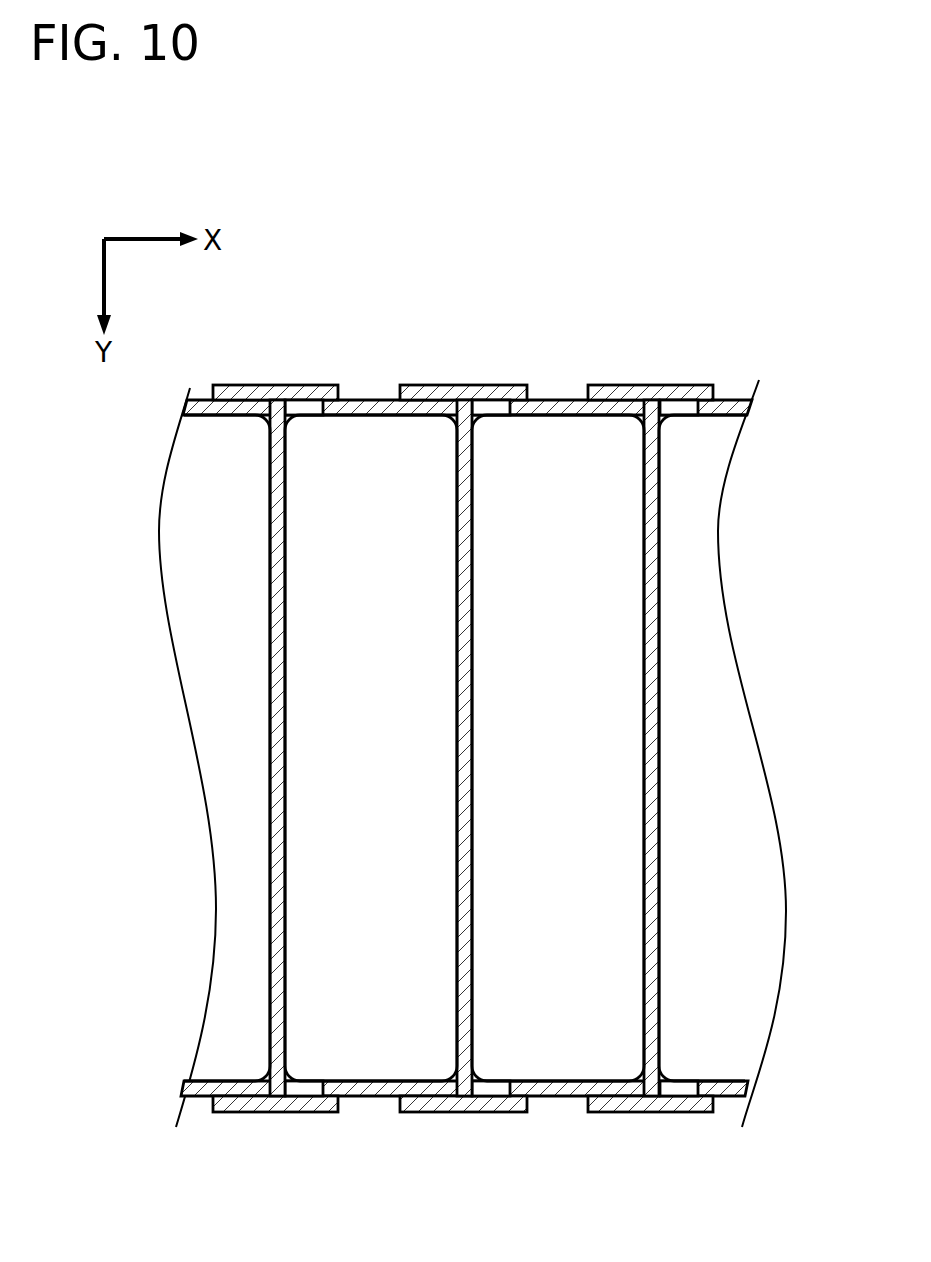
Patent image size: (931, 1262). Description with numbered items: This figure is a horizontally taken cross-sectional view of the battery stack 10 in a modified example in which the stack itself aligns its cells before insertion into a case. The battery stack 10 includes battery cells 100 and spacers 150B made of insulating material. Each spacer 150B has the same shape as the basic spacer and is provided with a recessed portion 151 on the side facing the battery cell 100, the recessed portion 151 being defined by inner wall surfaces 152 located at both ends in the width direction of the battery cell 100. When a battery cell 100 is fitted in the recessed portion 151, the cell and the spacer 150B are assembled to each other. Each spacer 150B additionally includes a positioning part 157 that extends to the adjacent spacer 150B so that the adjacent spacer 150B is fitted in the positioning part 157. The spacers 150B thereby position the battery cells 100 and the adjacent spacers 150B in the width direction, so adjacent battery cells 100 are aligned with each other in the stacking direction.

The battery stack 10 is at (632, 318).
The battery cell 100 is at (373, 1025).
The recessed portion 151 is at (455, 467).
The inner wall surface 152 is at (358, 415).
The positioning part 157 is at (305, 392).
The spacer 150B is at (372, 1102).